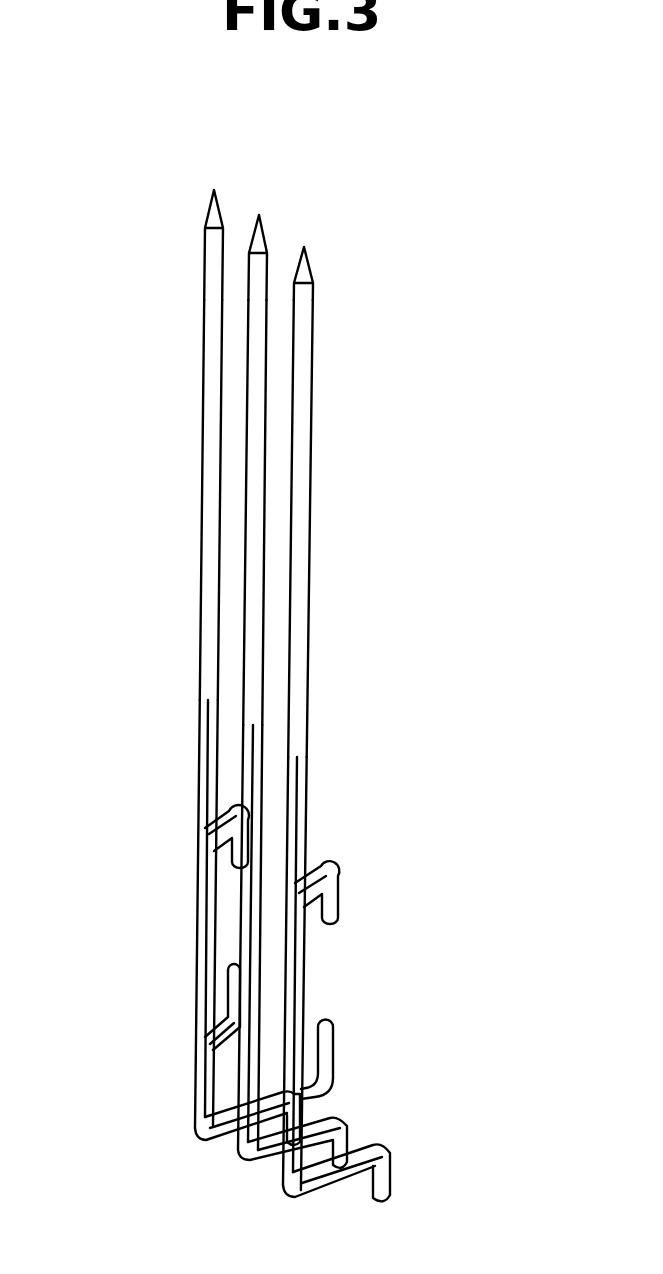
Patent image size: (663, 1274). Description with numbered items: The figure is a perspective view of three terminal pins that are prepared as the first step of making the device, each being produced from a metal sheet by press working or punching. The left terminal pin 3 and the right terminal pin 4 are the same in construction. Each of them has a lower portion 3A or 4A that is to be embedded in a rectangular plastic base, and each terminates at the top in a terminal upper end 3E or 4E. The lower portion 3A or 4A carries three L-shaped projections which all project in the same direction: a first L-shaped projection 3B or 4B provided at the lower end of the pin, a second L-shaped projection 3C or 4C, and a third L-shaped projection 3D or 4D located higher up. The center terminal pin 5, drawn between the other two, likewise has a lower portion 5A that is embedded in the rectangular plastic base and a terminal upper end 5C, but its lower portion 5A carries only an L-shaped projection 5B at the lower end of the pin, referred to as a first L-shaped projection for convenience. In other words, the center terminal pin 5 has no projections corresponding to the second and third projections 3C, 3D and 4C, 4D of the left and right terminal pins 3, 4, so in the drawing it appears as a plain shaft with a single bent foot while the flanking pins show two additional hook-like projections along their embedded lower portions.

The left terminal pin 3 is at (207, 538).
The lower portion 3A is at (198, 940).
The first L-shaped projection 3B is at (240, 1156).
The second L-shaped projection 3C is at (235, 990).
The third L-shaped projection 3D is at (237, 853).
The terminal upper end 3E is at (215, 283).
The right terminal pin 4 is at (305, 573).
The lower portion 4A is at (298, 977).
The first L-shaped projection 4B is at (388, 1177).
The second L-shaped projection 4C is at (333, 1047).
The third L-shaped projection 4D is at (333, 892).
The terminal upper end 4E is at (305, 363).
The center terminal pin 5 is at (255, 660).
The lower portion 5A is at (258, 793).
The first L-shaped projection 5B is at (345, 1122).
The terminal upper end 5C is at (257, 376).